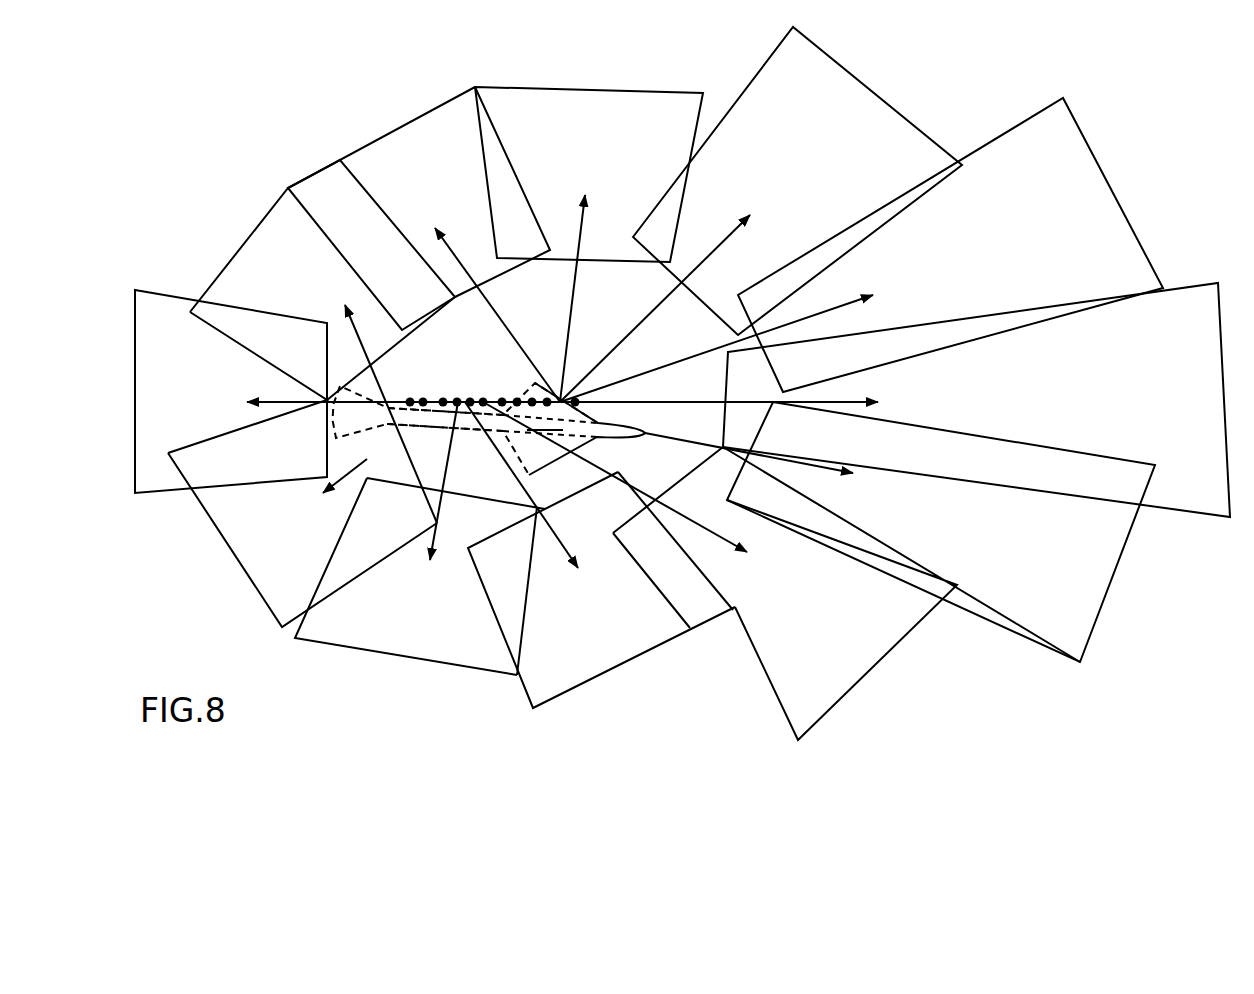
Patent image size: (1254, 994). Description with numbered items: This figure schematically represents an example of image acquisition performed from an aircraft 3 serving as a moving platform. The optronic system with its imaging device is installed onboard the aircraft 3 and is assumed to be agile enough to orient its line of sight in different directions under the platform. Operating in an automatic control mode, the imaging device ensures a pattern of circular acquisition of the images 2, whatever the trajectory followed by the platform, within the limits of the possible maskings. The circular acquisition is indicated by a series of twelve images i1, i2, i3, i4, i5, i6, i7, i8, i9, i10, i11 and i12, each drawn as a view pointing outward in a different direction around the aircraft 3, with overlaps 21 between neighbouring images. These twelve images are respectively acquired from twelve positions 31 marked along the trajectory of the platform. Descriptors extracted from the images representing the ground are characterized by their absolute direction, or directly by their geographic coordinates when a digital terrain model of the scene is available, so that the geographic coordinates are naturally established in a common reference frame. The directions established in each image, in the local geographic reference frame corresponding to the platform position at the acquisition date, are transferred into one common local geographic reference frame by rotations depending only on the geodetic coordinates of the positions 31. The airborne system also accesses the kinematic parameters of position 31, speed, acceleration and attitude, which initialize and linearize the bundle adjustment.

The images 2 is at (517, 686).
The overlaps 21 is at (702, 598).
The aircraft 3 is at (532, 380).
The positions 31 is at (459, 400).
The image i1 is at (376, 402).
The image i2 is at (231, 391).
The image i3 is at (416, 567).
The image i4 is at (313, 514).
The image i5 is at (532, 538).
The image i6 is at (631, 493).
The image i7 is at (900, 532).
The image i8 is at (895, 400).
The image i9 is at (861, 250).
The image i10 is at (761, 214).
The image i11 is at (579, 244).
The image i12 is at (375, 244).